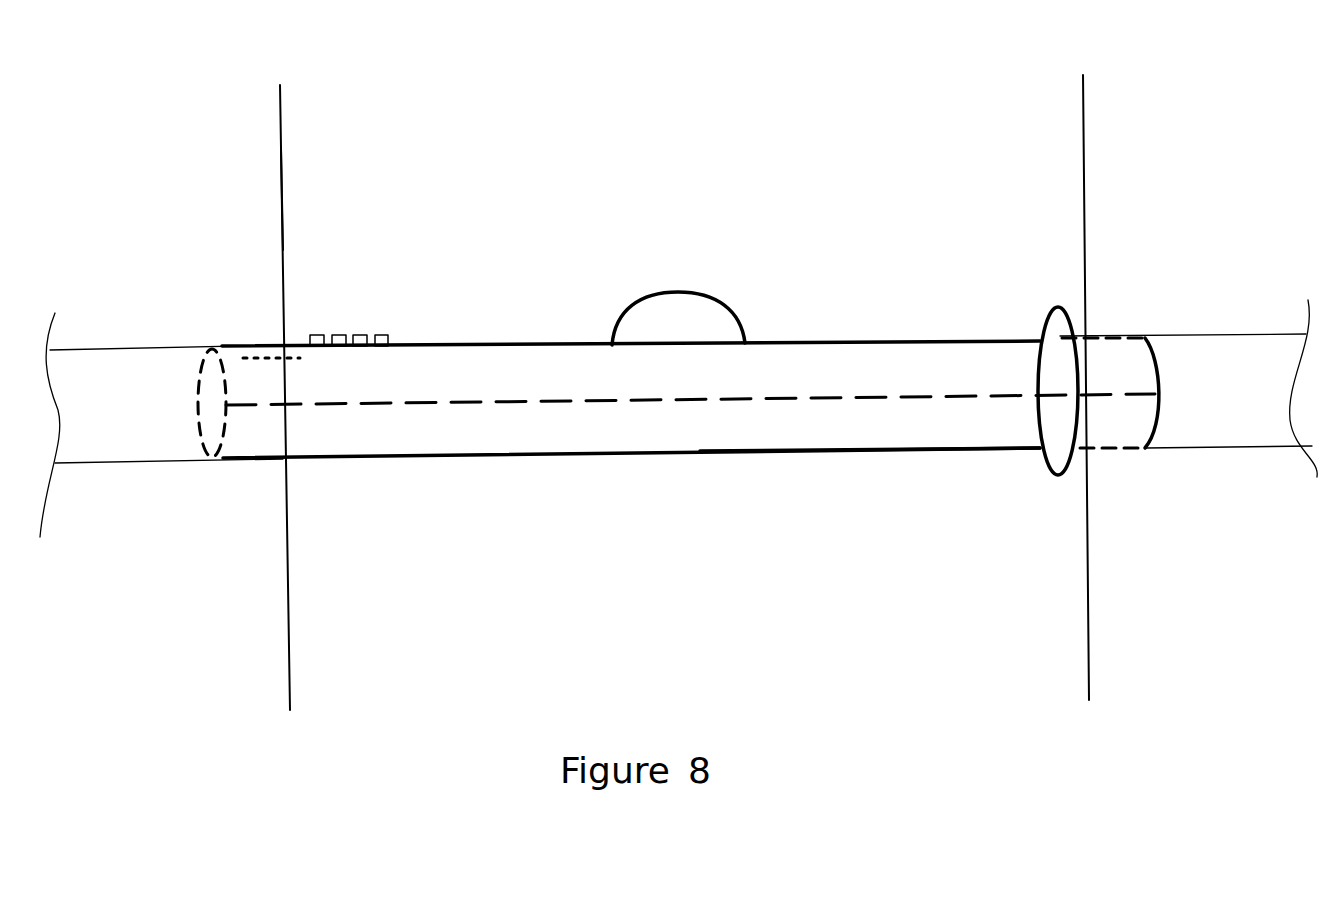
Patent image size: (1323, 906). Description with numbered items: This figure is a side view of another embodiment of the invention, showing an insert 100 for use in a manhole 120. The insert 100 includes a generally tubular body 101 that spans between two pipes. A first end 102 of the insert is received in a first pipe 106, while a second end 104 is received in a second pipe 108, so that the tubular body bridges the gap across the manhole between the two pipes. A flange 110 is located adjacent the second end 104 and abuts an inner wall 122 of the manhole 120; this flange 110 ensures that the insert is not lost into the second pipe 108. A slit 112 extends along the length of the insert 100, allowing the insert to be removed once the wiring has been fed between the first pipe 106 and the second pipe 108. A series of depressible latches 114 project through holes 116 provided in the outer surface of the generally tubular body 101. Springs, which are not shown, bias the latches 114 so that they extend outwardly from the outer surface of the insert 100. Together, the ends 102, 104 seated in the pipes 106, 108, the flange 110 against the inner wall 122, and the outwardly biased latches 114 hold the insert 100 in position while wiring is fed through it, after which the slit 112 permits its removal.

The insert 100 is at (885, 341).
The generally tubular body 101 is at (943, 437).
The first end 102 is at (235, 445).
The second end 104 is at (1123, 350).
The first pipe 106 is at (128, 450).
The second pipe 108 is at (1230, 442).
The flange 110 is at (1057, 323).
The slit 112 is at (523, 402).
The depressible latches 114 is at (388, 335).
The holes 116 is at (368, 334).
The manhole 120 is at (279, 130).
The inner wall 122 is at (281, 190).